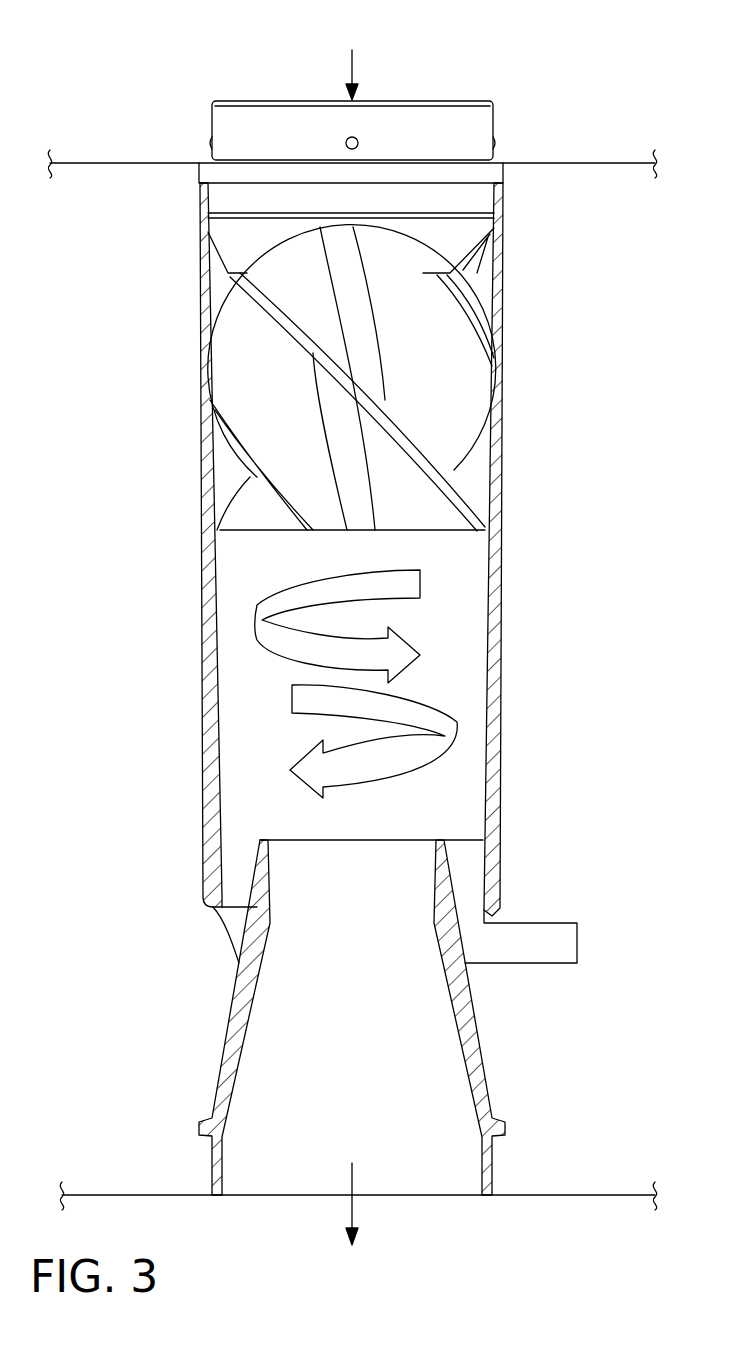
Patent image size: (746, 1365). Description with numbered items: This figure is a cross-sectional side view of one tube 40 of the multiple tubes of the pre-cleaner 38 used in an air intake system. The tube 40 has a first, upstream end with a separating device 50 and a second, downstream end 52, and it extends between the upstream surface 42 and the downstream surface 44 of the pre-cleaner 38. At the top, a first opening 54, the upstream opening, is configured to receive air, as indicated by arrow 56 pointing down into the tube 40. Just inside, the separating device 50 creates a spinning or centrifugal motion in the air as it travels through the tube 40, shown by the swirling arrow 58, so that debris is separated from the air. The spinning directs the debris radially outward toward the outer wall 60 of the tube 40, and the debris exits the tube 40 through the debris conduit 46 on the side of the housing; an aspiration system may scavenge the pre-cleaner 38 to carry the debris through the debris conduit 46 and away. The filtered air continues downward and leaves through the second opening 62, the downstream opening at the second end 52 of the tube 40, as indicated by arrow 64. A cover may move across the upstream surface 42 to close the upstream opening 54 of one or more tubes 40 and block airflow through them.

The pre-cleaner 38 is at (591, 58).
The tube 40 is at (584, 484).
The upstream surface 42 is at (578, 163).
The downstream surface 44 is at (565, 1195).
The debris conduit 46 is at (530, 923).
The separating device 50 is at (449, 79).
The second end 52 is at (395, 1213).
The first opening 54 is at (383, 102).
The arrow indicating air received 56 is at (350, 66).
The arrow indicating spinning air motion 58 is at (277, 638).
The outer wall 60 is at (500, 622).
The second opening 62 is at (258, 1195).
The arrow indicating filtered air exit 64 is at (352, 1208).